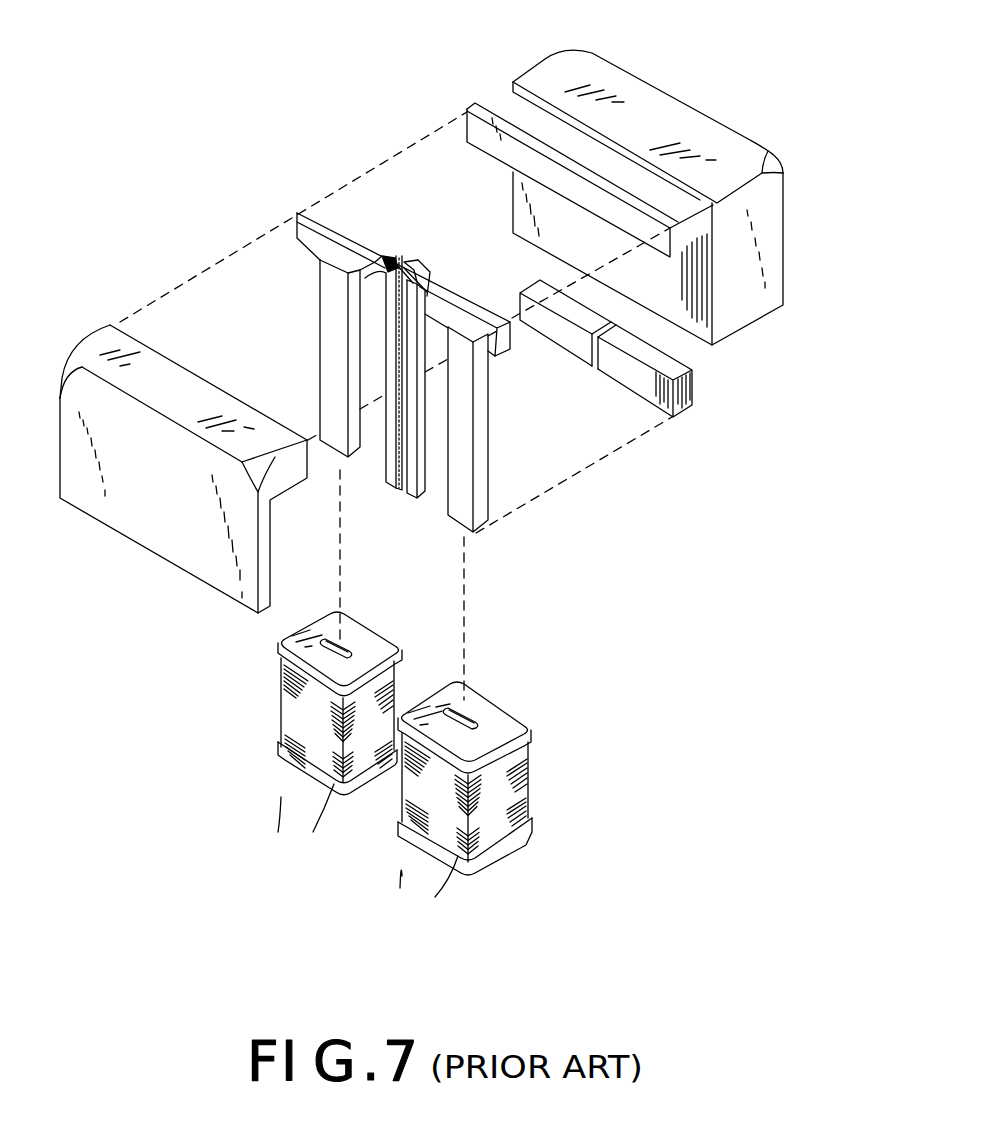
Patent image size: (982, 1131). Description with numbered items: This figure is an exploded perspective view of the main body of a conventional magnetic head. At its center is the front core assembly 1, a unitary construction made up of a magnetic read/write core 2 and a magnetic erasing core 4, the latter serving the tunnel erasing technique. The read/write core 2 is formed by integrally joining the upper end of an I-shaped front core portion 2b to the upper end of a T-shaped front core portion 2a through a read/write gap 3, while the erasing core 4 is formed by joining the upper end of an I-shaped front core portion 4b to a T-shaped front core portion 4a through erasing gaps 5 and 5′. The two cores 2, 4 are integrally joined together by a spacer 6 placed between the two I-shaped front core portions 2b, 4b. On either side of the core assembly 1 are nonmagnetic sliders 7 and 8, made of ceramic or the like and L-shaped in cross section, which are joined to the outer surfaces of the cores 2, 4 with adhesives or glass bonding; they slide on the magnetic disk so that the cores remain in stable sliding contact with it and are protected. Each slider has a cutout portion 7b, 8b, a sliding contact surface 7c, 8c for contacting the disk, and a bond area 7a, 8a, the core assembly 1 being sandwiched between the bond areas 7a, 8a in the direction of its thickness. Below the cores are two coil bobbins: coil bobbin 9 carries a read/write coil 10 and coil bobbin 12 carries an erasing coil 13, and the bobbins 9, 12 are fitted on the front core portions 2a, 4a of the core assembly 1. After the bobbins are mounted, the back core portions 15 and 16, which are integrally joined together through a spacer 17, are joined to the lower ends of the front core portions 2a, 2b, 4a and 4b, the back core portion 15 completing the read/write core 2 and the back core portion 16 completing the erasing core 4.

The front core assembly 1 is at (388, 183).
The magnetic read/write core 2 is at (469, 385).
The T-shaped front core portion 2a is at (471, 447).
The I-shaped front core portion 2b is at (405, 495).
The read/write gap 3 is at (430, 300).
The magnetic erasing core 4 is at (384, 369).
The T-shaped front core portion 4a is at (322, 383).
The I-shaped front core portion 4b is at (396, 488).
The erasing gap 5 is at (372, 265).
The erasing gap 5′ is at (372, 258).
The spacer 6 is at (397, 493).
The nonmagnetic slider 7 is at (190, 433).
The bond area 7a is at (140, 335).
The cutout portion 7b is at (270, 560).
The sliding contact surface 7c is at (180, 383).
The nonmagnetic slider 8 is at (599, 208).
The bond area 8a is at (470, 118).
The cutout portion 8b is at (700, 328).
The sliding contact surface 8c is at (528, 75).
The coil bobbin 9 is at (523, 843).
The read/write coil 10 is at (494, 789).
The coil bobbin 12 is at (280, 753).
The erasing coil 13 is at (301, 722).
The back core portion 15 is at (606, 379).
The back core portion 16 is at (557, 333).
The spacer 17 is at (600, 370).